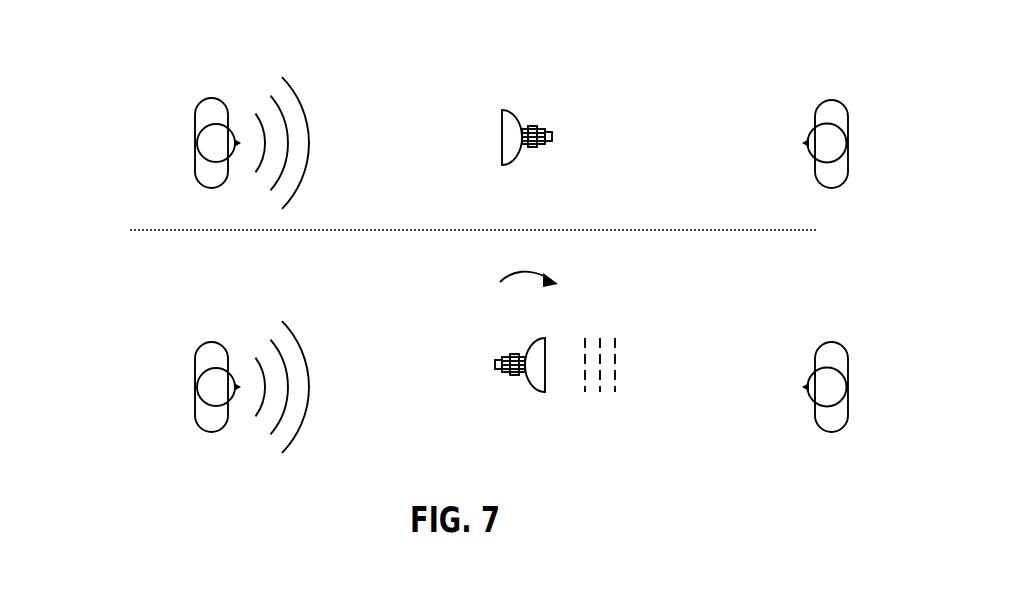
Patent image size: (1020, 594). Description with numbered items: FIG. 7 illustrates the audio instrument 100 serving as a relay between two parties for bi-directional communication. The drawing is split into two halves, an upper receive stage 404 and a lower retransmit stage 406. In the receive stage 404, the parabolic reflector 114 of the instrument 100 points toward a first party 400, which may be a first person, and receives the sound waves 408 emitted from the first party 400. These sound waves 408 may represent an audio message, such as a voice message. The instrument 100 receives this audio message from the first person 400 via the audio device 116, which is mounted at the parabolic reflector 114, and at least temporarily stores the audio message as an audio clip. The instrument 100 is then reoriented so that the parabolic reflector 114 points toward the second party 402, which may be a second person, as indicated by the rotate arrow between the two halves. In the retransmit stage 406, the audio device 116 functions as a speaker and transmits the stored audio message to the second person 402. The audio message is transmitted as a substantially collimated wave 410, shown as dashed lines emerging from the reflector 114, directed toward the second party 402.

The audio instrument 100 is at (534, 250).
The parabolic reflector 114 is at (502, 110).
The audio device 116 is at (500, 138).
The first party 400 is at (210, 98).
The second party 402 is at (832, 100).
The receive stage 404 is at (96, 101).
The retransmit stage 406 is at (96, 376).
The sound waves 408 is at (297, 98).
The substantially collimated wave 410 is at (598, 393).